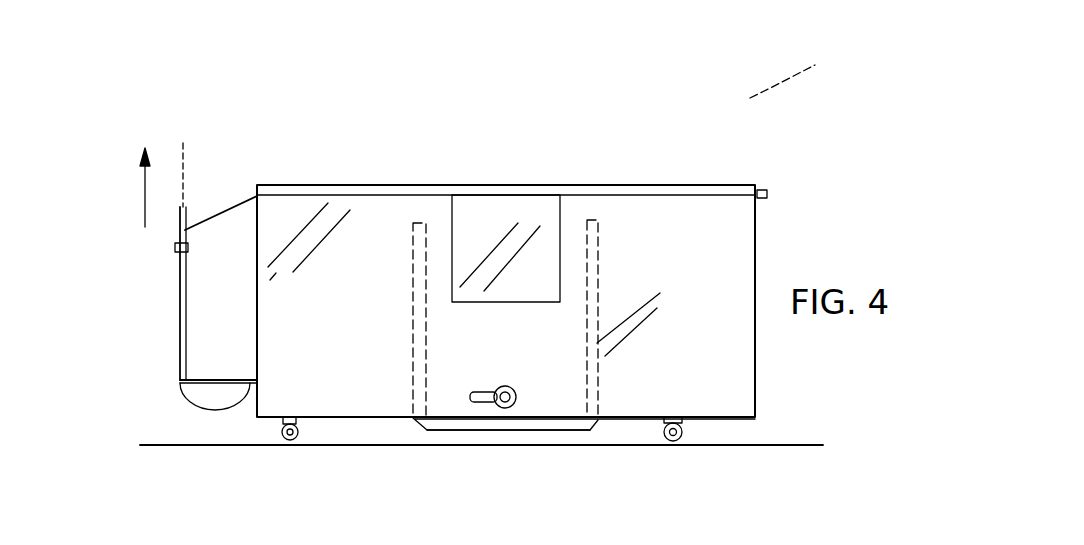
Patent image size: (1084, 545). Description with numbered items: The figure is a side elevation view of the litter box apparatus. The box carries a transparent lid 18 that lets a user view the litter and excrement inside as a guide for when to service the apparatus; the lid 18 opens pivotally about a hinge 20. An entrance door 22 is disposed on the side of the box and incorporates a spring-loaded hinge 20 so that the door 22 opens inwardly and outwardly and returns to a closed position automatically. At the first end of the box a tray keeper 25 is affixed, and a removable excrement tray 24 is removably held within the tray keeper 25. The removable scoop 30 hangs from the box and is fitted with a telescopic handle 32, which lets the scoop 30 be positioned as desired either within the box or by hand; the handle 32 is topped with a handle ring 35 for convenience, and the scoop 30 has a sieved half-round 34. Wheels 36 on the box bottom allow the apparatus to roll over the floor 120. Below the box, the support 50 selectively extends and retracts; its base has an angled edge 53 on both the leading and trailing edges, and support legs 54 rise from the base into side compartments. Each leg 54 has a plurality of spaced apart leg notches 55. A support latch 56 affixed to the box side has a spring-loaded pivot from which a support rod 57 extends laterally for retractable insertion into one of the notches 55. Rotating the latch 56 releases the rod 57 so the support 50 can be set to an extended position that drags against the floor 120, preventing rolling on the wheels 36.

The transparent lid 18 is at (590, 192).
The hinge 20 is at (768, 193).
The entrance door 22 is at (448, 206).
The removable excrement tray 24 is at (173, 250).
The tray keeper 25 is at (222, 203).
The removable scoop 30 is at (172, 387).
The telescopic handle 32 is at (181, 142).
The half-round 34 is at (215, 416).
The handle ring 35 is at (293, 441).
The wheels 36 is at (680, 443).
The support 50 is at (560, 440).
The angled edge 53 is at (417, 425).
The support legs 54 is at (410, 305).
The leg notches 55 is at (595, 228).
The support latch 56 is at (498, 374).
The support rod 57 is at (528, 385).
The floor 120 is at (812, 432).